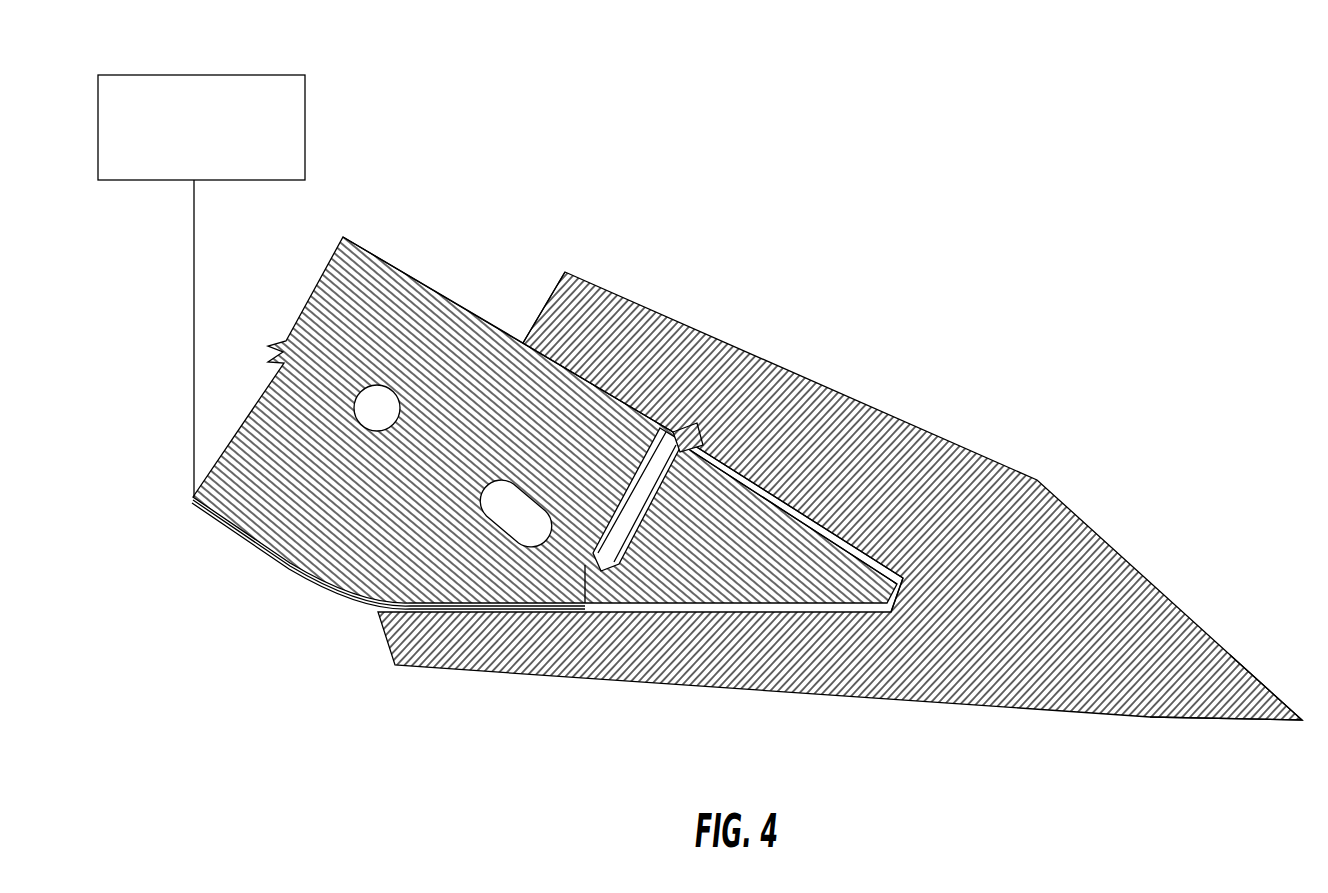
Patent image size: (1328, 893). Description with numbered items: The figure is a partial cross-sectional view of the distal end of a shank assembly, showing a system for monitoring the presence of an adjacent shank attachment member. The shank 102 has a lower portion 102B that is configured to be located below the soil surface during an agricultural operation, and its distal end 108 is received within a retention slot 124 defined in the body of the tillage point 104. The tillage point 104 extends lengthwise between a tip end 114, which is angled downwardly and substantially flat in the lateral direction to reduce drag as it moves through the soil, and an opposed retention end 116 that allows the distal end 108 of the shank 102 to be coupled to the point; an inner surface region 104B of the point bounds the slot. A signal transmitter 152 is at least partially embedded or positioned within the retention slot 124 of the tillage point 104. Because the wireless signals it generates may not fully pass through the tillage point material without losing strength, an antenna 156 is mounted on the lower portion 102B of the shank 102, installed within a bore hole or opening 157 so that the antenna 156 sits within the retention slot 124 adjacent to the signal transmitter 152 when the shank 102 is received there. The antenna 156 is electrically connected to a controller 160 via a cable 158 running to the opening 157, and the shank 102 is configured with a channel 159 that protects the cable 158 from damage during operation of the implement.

The shank 102 is at (373, 280).
The lower portion 102B is at (443, 307).
The tillage point 104 is at (895, 432).
The holder inner surface 104B is at (790, 500).
The distal end 108 is at (903, 587).
The tip end 114 is at (1302, 722).
The retention end 116 is at (550, 300).
The retention slot 124 is at (862, 547).
The signal transmitter 152 is at (696, 436).
The antenna 156 is at (638, 470).
The opening 157 is at (660, 527).
The cable 158 is at (193, 318).
The channel 159 is at (295, 553).
The controller 160 is at (218, 140).